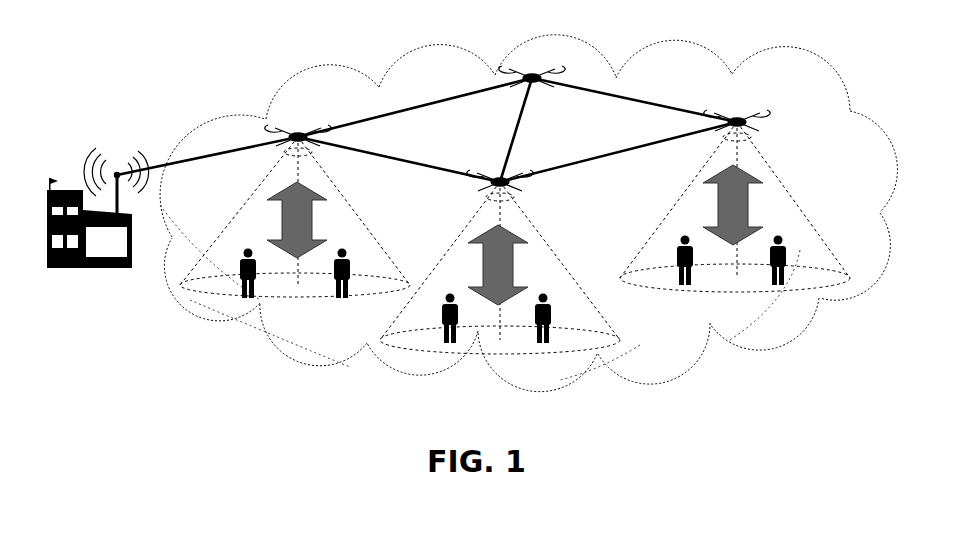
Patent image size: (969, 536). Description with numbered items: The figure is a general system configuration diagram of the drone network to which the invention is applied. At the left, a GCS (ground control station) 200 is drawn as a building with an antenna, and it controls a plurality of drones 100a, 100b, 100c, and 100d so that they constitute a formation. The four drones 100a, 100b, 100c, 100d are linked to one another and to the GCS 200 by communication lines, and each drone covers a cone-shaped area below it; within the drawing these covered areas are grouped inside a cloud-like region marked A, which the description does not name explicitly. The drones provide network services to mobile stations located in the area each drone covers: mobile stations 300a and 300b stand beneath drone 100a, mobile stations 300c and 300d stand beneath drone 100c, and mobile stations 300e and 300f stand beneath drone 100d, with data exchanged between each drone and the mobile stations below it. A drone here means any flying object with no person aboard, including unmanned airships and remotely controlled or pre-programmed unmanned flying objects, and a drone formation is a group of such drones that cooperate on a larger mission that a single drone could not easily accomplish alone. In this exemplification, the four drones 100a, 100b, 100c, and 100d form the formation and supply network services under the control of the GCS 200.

The area / communication network region A is at (775, 52).
The drone 100a is at (290, 133).
The drone 100b is at (531, 72).
The drone 100c is at (506, 178).
The drone 100d is at (740, 116).
The GCS (ground control station) 200 is at (128, 272).
The mobile station 300a is at (258, 280).
The mobile station 300b is at (350, 263).
The mobile station 300c is at (460, 325).
The mobile station 300d is at (552, 310).
The mobile station 300e is at (697, 262).
The mobile station 300f is at (786, 252).